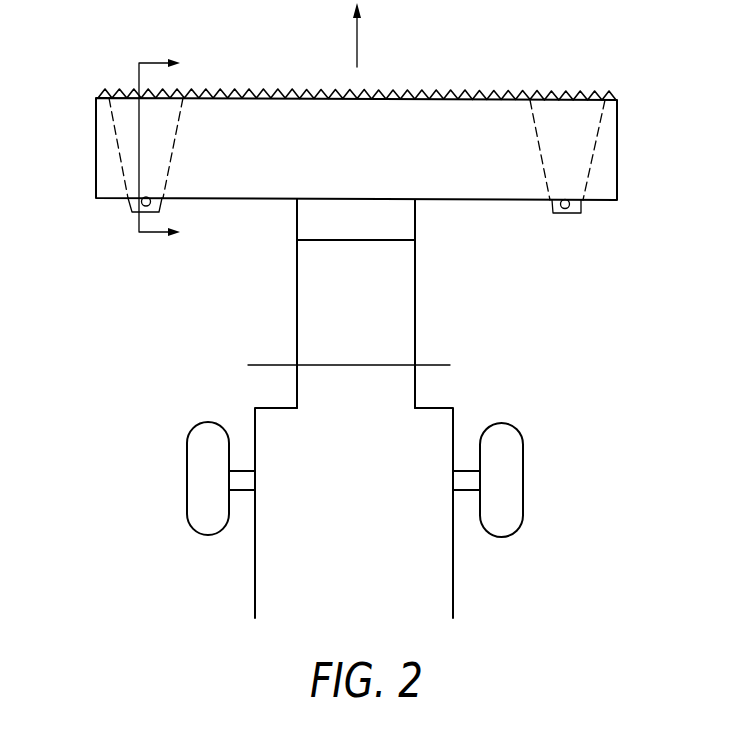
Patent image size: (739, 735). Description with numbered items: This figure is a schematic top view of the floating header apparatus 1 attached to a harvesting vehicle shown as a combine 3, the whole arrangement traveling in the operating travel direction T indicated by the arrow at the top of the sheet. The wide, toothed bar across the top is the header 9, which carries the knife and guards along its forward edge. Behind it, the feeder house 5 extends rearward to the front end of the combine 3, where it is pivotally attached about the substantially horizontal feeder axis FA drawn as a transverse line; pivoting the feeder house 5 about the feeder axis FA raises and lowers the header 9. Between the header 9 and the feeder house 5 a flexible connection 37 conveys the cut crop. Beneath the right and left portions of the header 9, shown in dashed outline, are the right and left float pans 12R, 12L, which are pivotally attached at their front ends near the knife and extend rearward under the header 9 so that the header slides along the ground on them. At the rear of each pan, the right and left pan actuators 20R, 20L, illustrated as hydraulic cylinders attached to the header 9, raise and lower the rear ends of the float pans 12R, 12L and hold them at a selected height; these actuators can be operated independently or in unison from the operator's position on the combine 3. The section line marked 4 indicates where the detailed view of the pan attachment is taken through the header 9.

The floating header apparatus 1 is at (361, 310).
The combine 3 is at (427, 452).
The section line 4- 4 is at (169, 146).
The feeder house 5 is at (393, 314).
The header 9 is at (617, 152).
The left float pan 12L is at (127, 118).
The right float pan 12R is at (580, 125).
The left pan actuator 20L is at (145, 210).
The right pan actuator 20R is at (580, 207).
The flexible connection 37 is at (308, 218).
The feeder axis FA is at (369, 364).
The operating travel direction T is at (369, 35).